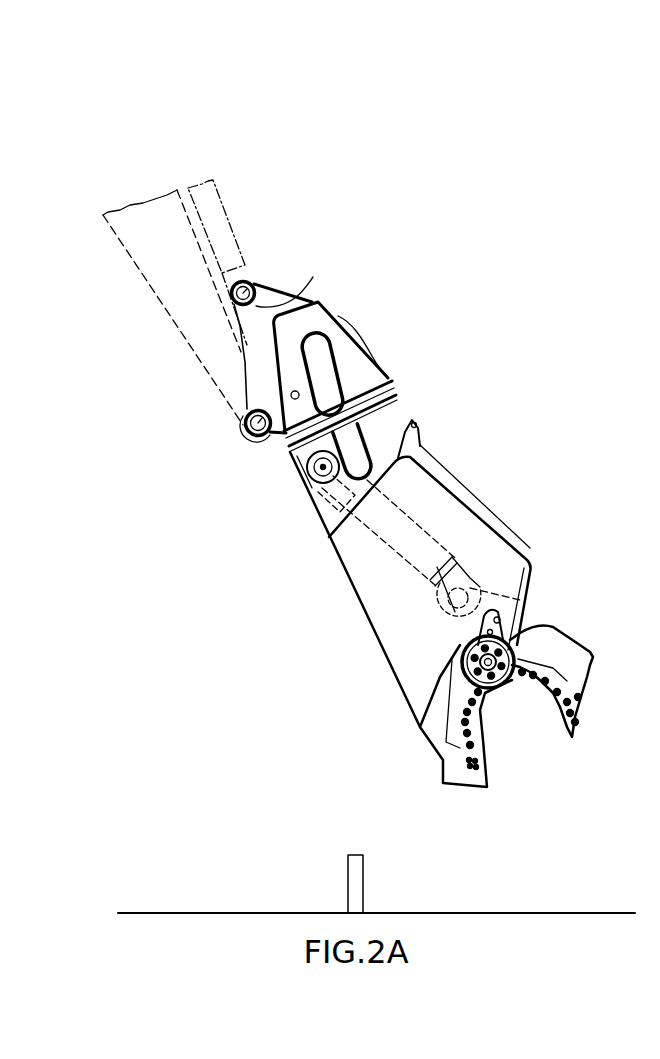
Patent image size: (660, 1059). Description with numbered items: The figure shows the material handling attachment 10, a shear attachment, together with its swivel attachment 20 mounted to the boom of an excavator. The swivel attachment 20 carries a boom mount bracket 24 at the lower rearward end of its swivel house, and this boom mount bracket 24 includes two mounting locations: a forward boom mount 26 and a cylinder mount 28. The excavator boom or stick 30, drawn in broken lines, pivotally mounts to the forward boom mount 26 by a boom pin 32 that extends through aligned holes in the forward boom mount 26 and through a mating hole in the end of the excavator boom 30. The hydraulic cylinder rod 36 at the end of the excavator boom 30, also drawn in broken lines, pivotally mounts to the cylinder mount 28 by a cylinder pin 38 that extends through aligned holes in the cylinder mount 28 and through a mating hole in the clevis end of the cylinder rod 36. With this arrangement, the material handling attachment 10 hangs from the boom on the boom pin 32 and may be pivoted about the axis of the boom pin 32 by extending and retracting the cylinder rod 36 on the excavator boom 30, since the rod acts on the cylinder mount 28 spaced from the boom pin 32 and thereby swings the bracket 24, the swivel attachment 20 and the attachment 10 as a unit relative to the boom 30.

The material handling attachment 10 is at (478, 449).
The swivel attachment 20 is at (361, 301).
The boom mount bracket 24 is at (253, 380).
The forward boom mount 26 is at (260, 437).
The cylinder mount 28 is at (251, 284).
The excavator boom 30 is at (148, 257).
The boom pin 32 is at (250, 410).
The hydraulic cylinder rod 36 is at (250, 267).
The cylinder pin 38 is at (297, 295).